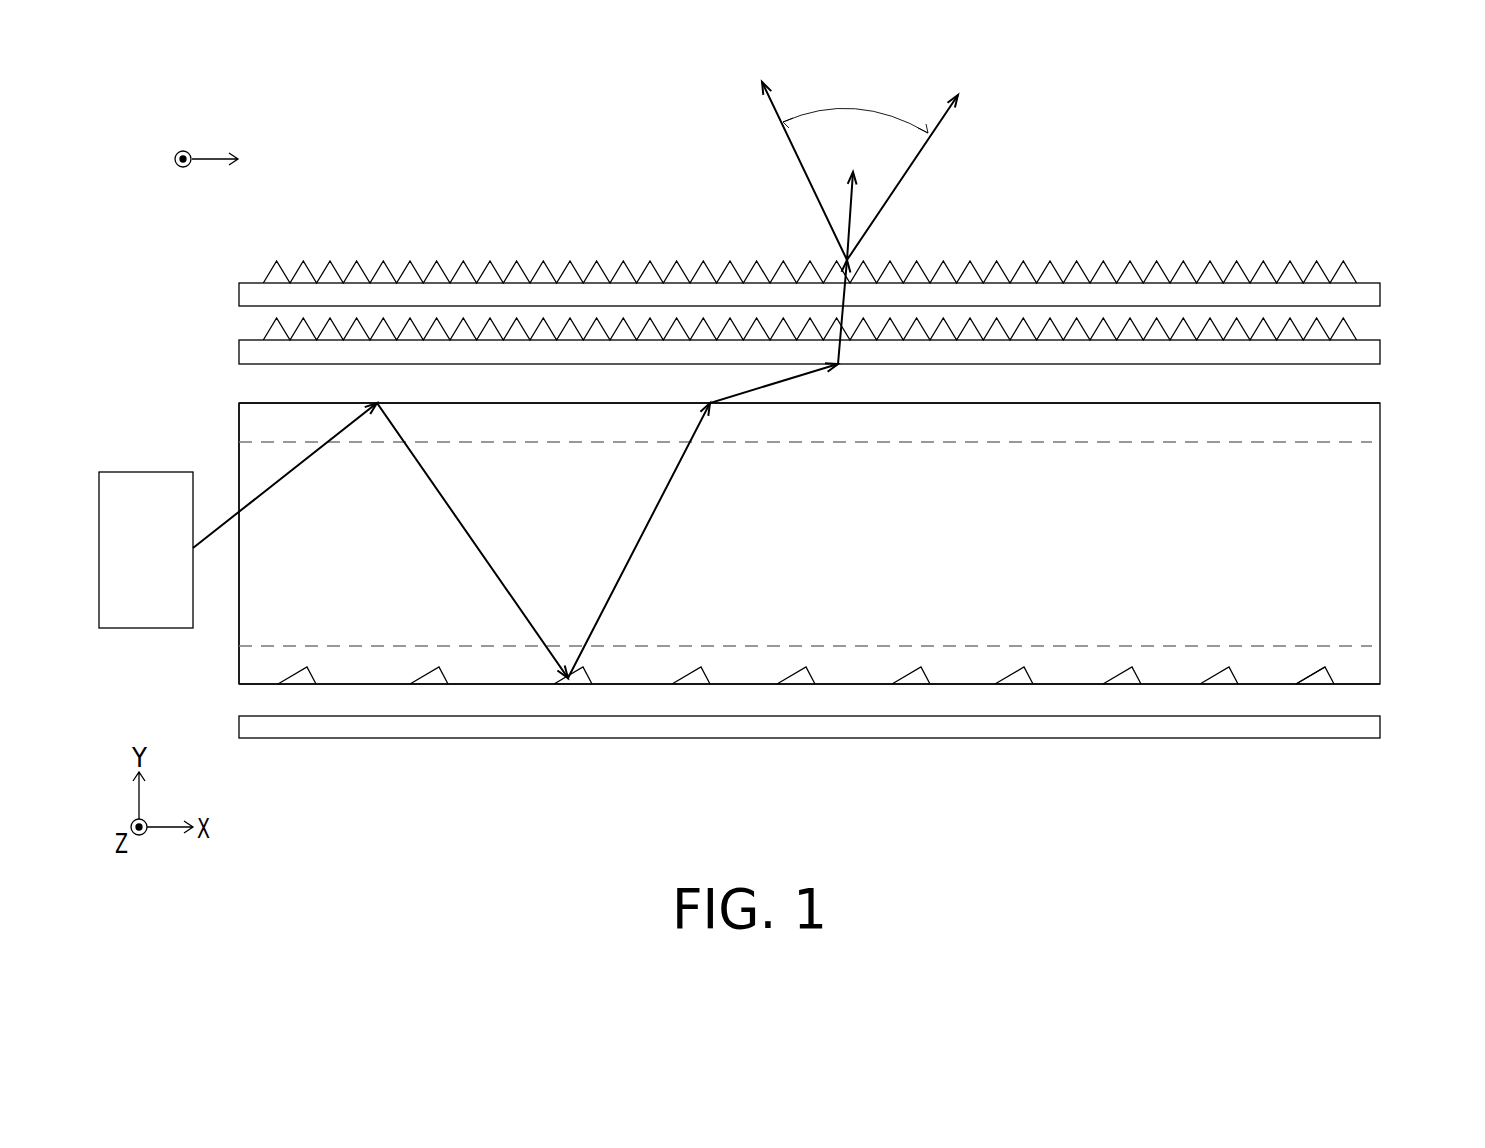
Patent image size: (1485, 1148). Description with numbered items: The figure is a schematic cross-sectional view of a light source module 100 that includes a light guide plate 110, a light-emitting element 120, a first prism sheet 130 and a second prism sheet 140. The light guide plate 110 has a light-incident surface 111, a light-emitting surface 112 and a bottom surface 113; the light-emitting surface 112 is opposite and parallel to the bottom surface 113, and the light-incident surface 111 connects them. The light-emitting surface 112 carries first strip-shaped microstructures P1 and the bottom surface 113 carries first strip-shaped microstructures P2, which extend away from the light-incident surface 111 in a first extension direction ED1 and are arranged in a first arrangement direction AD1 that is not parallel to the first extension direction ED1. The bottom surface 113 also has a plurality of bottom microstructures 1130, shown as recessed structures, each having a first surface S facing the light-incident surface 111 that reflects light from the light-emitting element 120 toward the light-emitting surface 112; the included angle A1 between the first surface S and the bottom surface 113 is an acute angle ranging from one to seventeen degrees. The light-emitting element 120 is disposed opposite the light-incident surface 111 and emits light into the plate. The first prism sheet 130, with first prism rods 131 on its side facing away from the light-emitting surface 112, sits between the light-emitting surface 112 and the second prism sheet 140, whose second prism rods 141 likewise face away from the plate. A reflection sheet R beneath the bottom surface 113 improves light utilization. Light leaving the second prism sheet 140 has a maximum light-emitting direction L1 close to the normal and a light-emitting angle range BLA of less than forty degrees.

The light source module 100 is at (172, 99).
The light guide plate 110 is at (1368, 540).
The light-incident surface 111 is at (237, 474).
The light-emitting surface 112 is at (1163, 440).
The bottom surface 113 is at (1269, 648).
The bottom microstructures 1130 is at (1326, 678).
The light-emitting element 120 is at (142, 608).
The first prism sheet 130 is at (1368, 354).
The first prism rods 131 is at (272, 332).
The second prism sheet 140 is at (1368, 296).
The second prism rods 141 is at (273, 275).
The first strip-shaped microstructures P1 is at (1368, 423).
The first strip-shaped microstructures P2 is at (1368, 665).
The first surface S is at (1311, 678).
The reflection sheet R is at (1351, 739).
The included angle A1 is at (1090, 629).
The maximum light-emitting direction L1 is at (575, 380).
The light-emitting angle range BLA is at (855, 104).
The first extension direction ED1 is at (236, 159).
The first arrangement direction AD1 is at (165, 174).